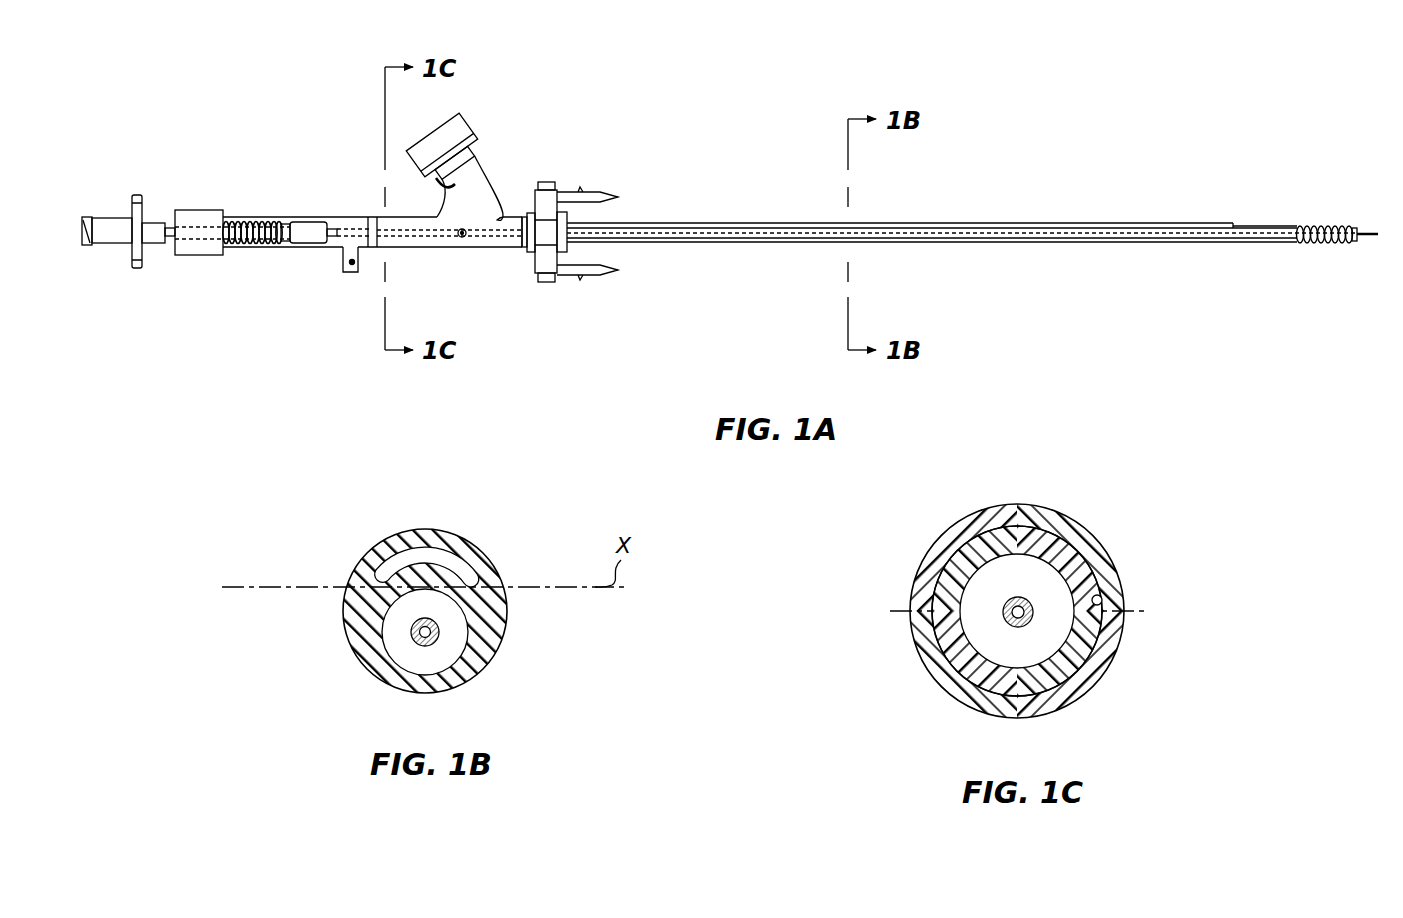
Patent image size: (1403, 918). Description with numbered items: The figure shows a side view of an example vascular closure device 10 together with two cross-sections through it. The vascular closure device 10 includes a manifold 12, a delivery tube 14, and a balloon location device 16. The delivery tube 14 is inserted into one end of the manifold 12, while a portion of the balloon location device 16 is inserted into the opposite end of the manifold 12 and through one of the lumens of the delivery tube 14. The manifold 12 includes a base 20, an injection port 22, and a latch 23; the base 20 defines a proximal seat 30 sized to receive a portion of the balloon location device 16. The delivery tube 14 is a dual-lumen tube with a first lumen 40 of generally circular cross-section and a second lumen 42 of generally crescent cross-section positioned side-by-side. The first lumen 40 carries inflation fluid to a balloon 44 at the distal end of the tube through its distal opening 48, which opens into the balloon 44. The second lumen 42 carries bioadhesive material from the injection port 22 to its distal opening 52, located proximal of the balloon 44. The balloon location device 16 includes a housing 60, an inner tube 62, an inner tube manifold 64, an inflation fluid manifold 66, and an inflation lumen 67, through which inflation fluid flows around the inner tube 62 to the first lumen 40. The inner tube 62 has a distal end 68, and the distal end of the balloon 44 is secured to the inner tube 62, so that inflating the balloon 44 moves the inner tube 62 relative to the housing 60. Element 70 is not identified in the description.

In FIG. 1A, the vascular closure device 10 is at (987, 85).
In FIG. 1A, the manifold 12 is at (492, 152).
In FIG. 1A, the delivery tube 14 is at (700, 220).
In FIG. 1B, the delivery tube 14 is at (489, 543).
In FIG. 1A, the balloon location device 16 is at (208, 208).
In FIG. 1C, the balloon location device 16 is at (1042, 698).
In FIG. 1A, the base 20 is at (459, 257).
In FIG. 1C, the base 20 is at (1099, 527).
In FIG. 1A, the injection port 22 is at (437, 117).
In FIG. 1A, the latch 23 is at (585, 193).
In FIG. 1C, the proximal seat 30 is at (1100, 600).
In FIG. 1B, the first lumen 40 is at (476, 667).
In FIG. 1B, the second lumen 42 is at (396, 563).
In FIG. 1A, the balloon 44 is at (1320, 244).
In FIG. 1A, the distal opening 48 is at (1330, 226).
In FIG. 1A, the distal opening 52 is at (1246, 227).
In FIG. 1A, the housing 60 is at (256, 250).
In FIG. 1A, the inner tube 62 is at (1364, 232).
In FIG. 1B, the inner tube 62 is at (421, 640).
In FIG. 1C, the inner tube 62 is at (1015, 628).
In FIG. 1A, the inner tube manifold 64 is at (88, 250).
In FIG. 1A, the inflation fluid manifold 66 is at (343, 268).
In FIG. 1C, the inflation lumen 67 is at (980, 577).
In FIG. 1A, the distal end 68 is at (1371, 237).
In FIG. 1B, the wire sheath 70 is at (418, 637).
In FIG. 1C, the wire sheath 70 is at (1010, 625).